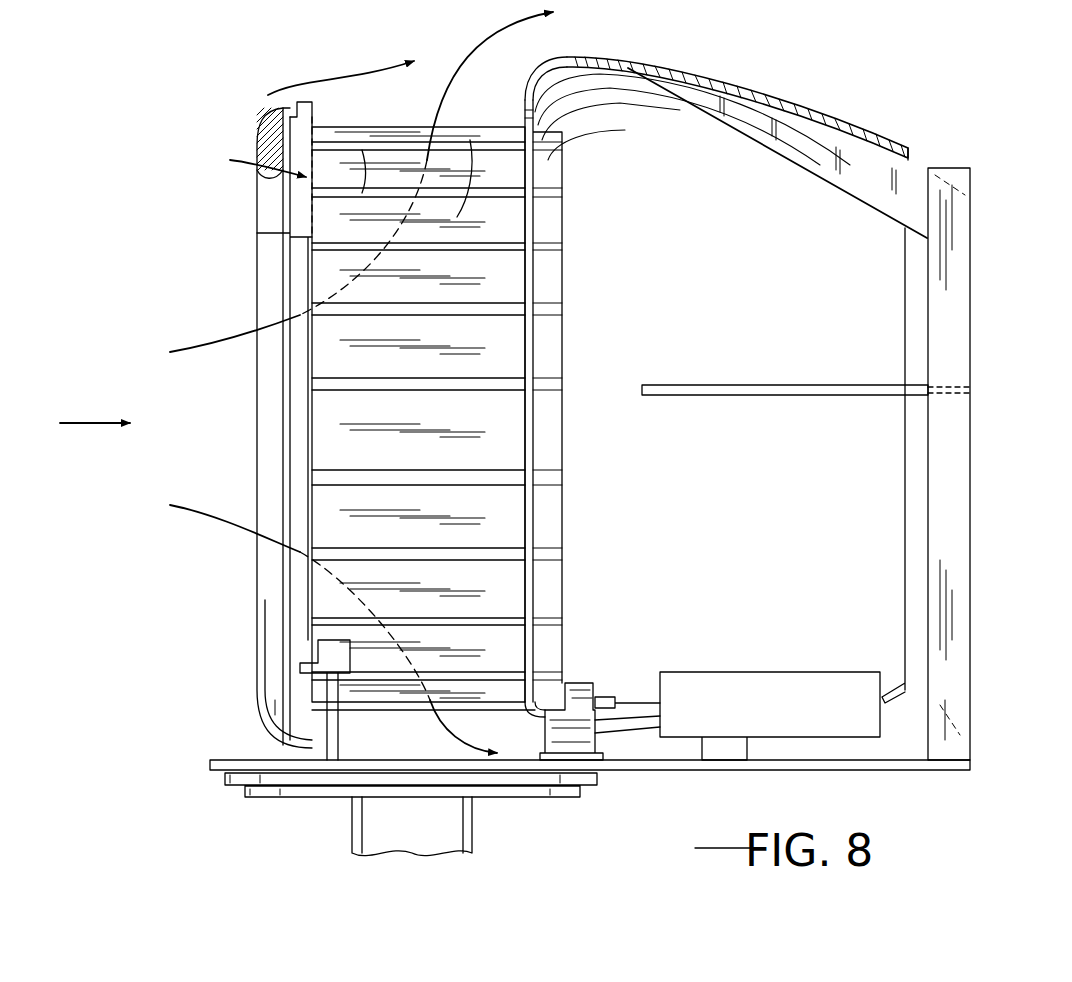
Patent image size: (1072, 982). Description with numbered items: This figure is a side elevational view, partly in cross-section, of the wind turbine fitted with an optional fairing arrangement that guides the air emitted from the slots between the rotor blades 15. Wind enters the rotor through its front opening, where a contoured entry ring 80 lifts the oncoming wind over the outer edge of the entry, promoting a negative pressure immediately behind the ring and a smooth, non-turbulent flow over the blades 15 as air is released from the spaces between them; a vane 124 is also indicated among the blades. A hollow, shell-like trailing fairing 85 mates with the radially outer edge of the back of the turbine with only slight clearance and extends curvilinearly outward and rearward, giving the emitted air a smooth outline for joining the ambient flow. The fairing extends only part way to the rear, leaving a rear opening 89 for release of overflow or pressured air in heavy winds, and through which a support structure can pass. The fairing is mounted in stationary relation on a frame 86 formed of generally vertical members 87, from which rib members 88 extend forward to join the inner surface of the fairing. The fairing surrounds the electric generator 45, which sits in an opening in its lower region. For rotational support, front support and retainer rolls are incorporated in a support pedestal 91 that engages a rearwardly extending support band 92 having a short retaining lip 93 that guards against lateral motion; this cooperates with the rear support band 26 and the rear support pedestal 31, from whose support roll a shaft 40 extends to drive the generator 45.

The rotor blades 15 is at (460, 140).
The vane 124 is at (358, 150).
The rear support band 26 is at (565, 213).
The contoured entry ring 80 is at (265, 127).
The rearwardly extending support band 92 is at (302, 102).
The short retaining lip 93 is at (290, 747).
The fairing 85 is at (795, 100).
The rear opening 89 is at (912, 150).
The rib members 88 is at (846, 182).
The frame 86 is at (978, 338).
The vertical members 87 is at (950, 438).
The support pedestal 91 is at (346, 652).
The rear support pedestal 31 is at (582, 683).
The shaft 40 is at (605, 697).
The electric generator 45 is at (765, 672).